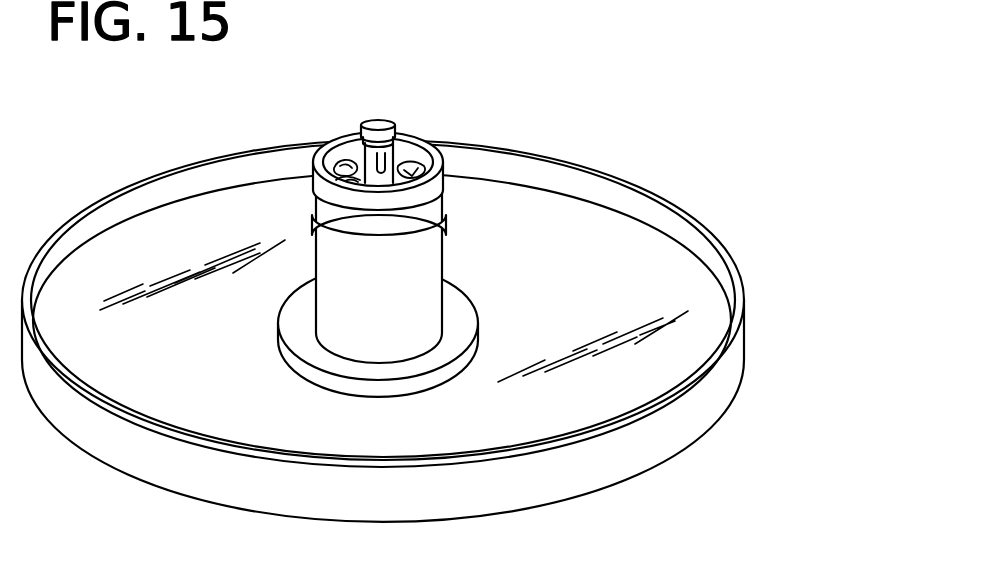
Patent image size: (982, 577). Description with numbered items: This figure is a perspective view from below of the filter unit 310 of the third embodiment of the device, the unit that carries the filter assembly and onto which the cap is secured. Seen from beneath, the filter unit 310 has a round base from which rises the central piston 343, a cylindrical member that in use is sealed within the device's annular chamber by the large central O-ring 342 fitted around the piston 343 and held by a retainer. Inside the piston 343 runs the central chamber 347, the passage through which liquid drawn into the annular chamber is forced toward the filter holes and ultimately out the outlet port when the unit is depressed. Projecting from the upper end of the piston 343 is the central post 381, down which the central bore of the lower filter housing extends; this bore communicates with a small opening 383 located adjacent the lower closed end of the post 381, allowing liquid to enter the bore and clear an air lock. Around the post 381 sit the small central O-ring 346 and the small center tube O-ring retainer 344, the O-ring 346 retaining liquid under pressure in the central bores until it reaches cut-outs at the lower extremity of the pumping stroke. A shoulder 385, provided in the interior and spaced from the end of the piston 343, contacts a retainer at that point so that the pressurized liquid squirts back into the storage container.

The filter unit 310 is at (747, 360).
The large central O-ring 342 is at (442, 233).
The central piston 343 is at (320, 205).
The small center tube O-ring retainer 344 is at (377, 120).
The small central O-ring 346 is at (368, 162).
The central chamber 347 is at (413, 175).
The central post 381 is at (393, 157).
The small opening 383 is at (347, 162).
The shoulder 385 is at (377, 163).